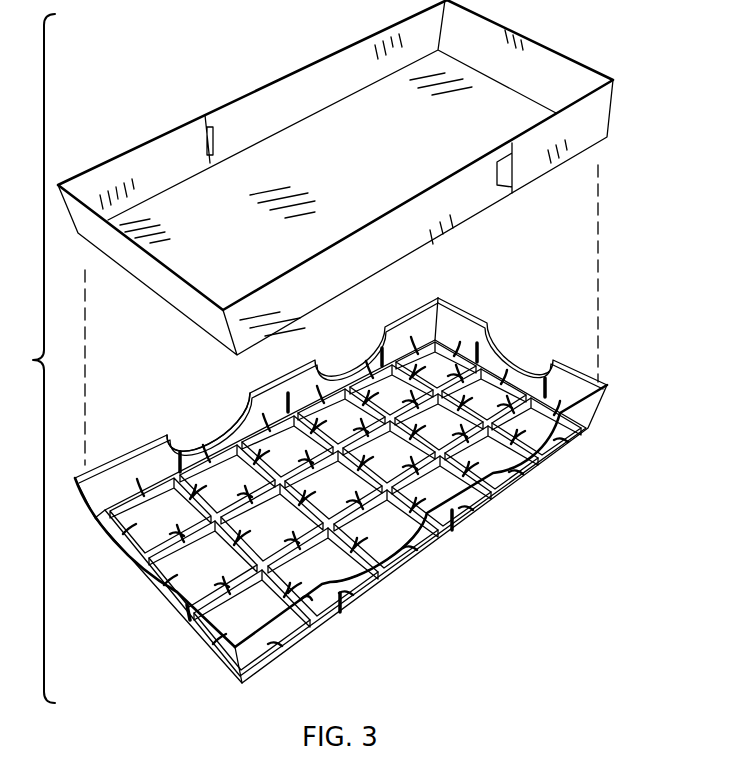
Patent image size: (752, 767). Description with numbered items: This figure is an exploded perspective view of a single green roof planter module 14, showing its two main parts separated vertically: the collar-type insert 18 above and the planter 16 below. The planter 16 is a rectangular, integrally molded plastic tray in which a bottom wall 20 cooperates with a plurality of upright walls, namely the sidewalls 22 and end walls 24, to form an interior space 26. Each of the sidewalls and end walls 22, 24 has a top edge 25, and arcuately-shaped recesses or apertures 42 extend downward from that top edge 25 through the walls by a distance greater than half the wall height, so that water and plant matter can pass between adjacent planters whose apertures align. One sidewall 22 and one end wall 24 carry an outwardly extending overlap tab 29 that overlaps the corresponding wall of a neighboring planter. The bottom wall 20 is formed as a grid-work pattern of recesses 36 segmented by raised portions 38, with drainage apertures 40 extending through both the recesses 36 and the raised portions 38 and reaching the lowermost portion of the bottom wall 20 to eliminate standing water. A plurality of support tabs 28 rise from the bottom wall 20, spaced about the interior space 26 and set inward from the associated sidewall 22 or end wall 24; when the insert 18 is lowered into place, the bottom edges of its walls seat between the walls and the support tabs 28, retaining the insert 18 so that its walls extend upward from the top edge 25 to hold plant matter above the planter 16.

The green roof planter module 14 is at (31, 358).
The planter 16 is at (341, 433).
The insert (collar member) 18 is at (133, 141).
The bottom wall 20 is at (392, 352).
The sidewall 22 is at (430, 530).
The end wall 24 is at (210, 638).
The top edge 25 is at (307, 603).
The interior space 26 is at (461, 328).
The support tab 28 is at (184, 458).
The overlap tab 29 is at (245, 385).
The recess 36 is at (157, 512).
The raised portion 38 is at (290, 392).
The drainage aperture 40 is at (342, 366).
The arcuately-shaped recess (aperture) 42 is at (408, 552).